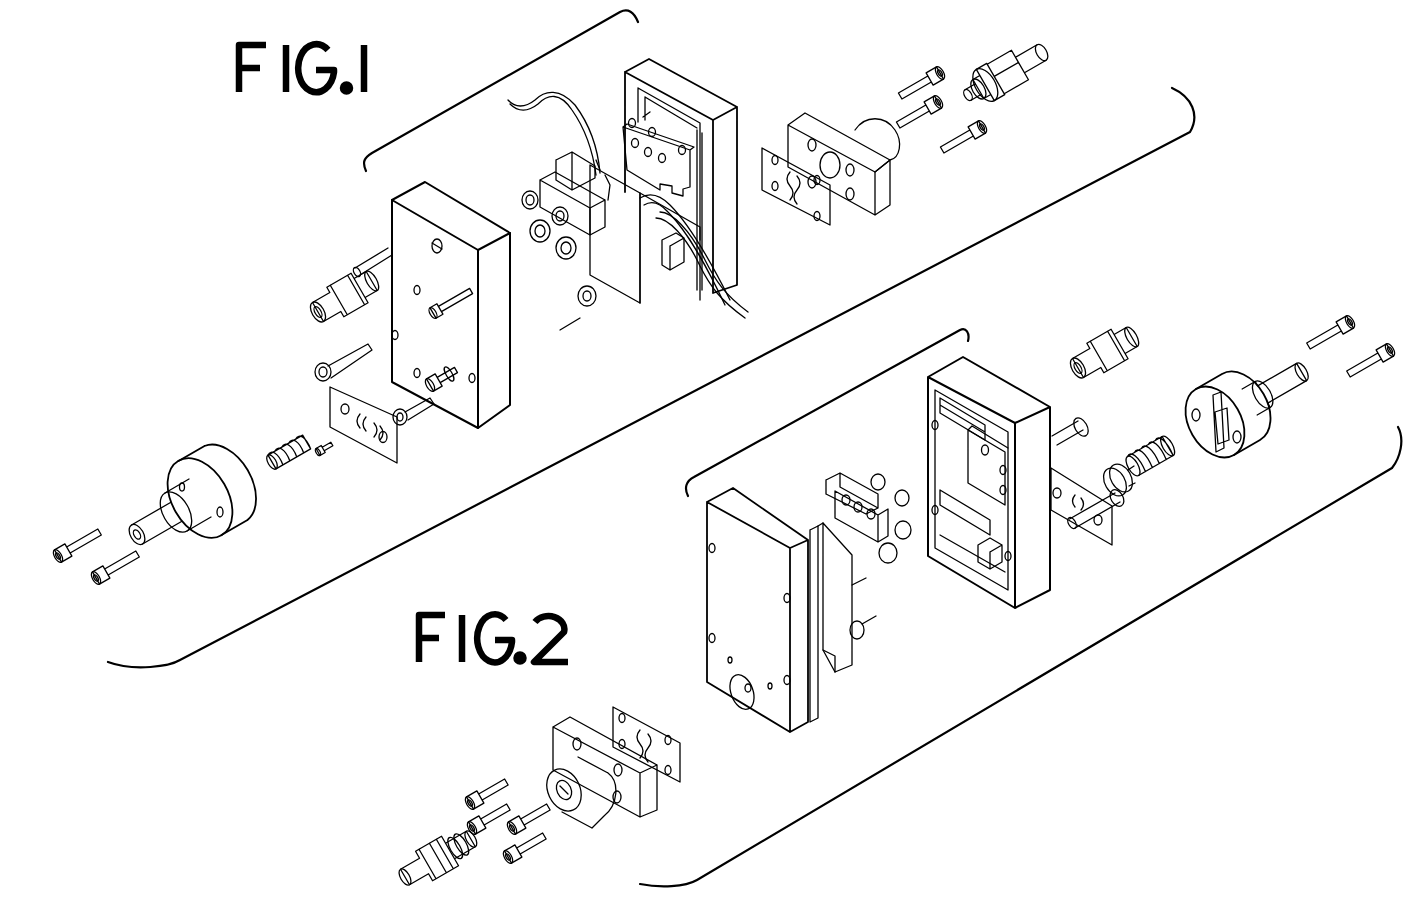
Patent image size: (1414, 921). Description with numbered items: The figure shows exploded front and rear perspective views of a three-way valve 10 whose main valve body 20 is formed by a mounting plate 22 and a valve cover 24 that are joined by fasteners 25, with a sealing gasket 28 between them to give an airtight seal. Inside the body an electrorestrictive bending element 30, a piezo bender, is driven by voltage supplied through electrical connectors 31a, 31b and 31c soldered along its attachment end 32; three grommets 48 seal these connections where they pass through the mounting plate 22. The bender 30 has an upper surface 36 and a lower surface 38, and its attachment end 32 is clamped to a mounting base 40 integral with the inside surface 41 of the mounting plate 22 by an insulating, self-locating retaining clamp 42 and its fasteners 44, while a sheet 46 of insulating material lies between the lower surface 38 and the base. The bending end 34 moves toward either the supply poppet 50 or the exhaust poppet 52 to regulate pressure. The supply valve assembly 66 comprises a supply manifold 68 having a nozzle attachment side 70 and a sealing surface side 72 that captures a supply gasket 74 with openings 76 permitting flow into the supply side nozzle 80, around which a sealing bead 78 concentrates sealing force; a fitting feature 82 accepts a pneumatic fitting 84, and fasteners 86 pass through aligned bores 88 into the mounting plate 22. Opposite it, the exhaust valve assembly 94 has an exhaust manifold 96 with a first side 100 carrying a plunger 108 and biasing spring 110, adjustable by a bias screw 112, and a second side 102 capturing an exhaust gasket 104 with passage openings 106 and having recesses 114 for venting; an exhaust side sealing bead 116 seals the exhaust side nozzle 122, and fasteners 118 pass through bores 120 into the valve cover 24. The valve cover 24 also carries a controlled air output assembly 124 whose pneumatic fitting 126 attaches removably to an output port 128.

In FIG. 1, the three-way valve 10 is at (306, 186).
In FIG. 2, the three-way valve 10 is at (622, 564).
In FIG. 1, the main valve body 20 is at (502, 74).
In FIG. 2, the main valve body 20 is at (826, 402).
In FIG. 1, the mounting plate 22 is at (740, 268).
In FIG. 2, the mounting plate 22 is at (718, 528).
In FIG. 1, the valve cover 24 is at (500, 402).
In FIG. 2, the valve cover 24 is at (1035, 570).
In FIG. 1, the fasteners 25 is at (318, 368).
In FIG. 1, the sealing gasket 28 is at (660, 145).
In FIG. 2, the sealing gasket 28 is at (820, 708).
In FIG. 1, the electrorestrictive bending element 30 is at (660, 300).
In FIG. 2, the electrorestrictive bending element 30 is at (852, 590).
In FIG. 1, the electrical connector 31a is at (566, 95).
In FIG. 1, the electrical connector 31b is at (705, 288).
In FIG. 1, the electrical connector 31c is at (745, 302).
In FIG. 2, the attachment end 32 is at (822, 525).
In FIG. 1, the bending end 34 is at (624, 308).
In FIG. 2, the bending end 34 is at (835, 660).
In FIG. 2, the upper surface 36 is at (835, 640).
In FIG. 1, the lower surface 38 is at (647, 300).
In FIG. 1, the mounting base 40 is at (690, 150).
In FIG. 1, the inside surface 41 is at (690, 198).
In FIG. 1, the retaining clamp 42 is at (548, 168).
In FIG. 2, the retaining clamp 42 is at (842, 472).
In FIG. 1, the fasteners 44 is at (525, 196).
In FIG. 1, the sheet of insulating material 46 is at (666, 150).
In FIG. 1, the grommets 48 is at (540, 242).
In FIG. 2, the grommets 48 is at (890, 556).
In FIG. 1, the supply poppet 50 is at (588, 306).
In FIG. 1, the exhaust poppet 52 is at (665, 282).
In FIG. 2, the exhaust poppet 52 is at (868, 628).
In FIG. 1, the supply valve assembly 66 is at (928, 174).
In FIG. 2, the supply valve assembly 66 is at (656, 816).
In FIG. 1, the supply manifold 68 is at (885, 193).
In FIG. 2, the supply manifold 68 is at (650, 792).
In FIG. 2, the nozzle attachment side 70 is at (562, 742).
In FIG. 1, the sealing surface side 72 is at (820, 150).
In FIG. 1, the supply gasket 74 is at (830, 215).
In FIG. 2, the supply gasket 74 is at (685, 762).
In FIG. 1, the openings 76 is at (790, 195).
In FIG. 2, the openings 76 is at (646, 732).
In FIG. 2, the sealing bead 78 is at (745, 700).
In FIG. 2, the supply side nozzle 80 is at (752, 698).
In FIG. 1, the fitting feature 82 is at (873, 135).
In FIG. 1, the pneumatic fitting 84 is at (1040, 94).
In FIG. 2, the pneumatic fitting 84 is at (420, 866).
In FIG. 1, the fasteners 86 is at (972, 138).
In FIG. 2, the fasteners 86 is at (468, 800).
In FIG. 1, the bores 88 is at (855, 198).
In FIG. 2, the bores 88 is at (618, 802).
In FIG. 1, the exhaust valve assembly 94 is at (178, 453).
In FIG. 2, the exhaust valve assembly 94 is at (1243, 459).
In FIG. 1, the exhaust manifold 96 is at (240, 518).
In FIG. 2, the exhaust manifold 96 is at (1225, 382).
In FIG. 1, the first side 100 is at (190, 535).
In FIG. 1, the second side 102 is at (236, 465).
In FIG. 2, the second side 102 is at (1196, 405).
In FIG. 1, the exhaust gasket 104 is at (363, 447).
In FIG. 2, the exhaust gasket 104 is at (1085, 520).
In FIG. 1, the passage openings 106 is at (383, 440).
In FIG. 2, the passage openings 106 is at (1076, 500).
In FIG. 1, the plunger 108 is at (327, 450).
In FIG. 2, the plunger 108 is at (1110, 492).
In FIG. 1, the biasing spring 110 is at (302, 470).
In FIG. 2, the biasing spring 110 is at (1165, 472).
In FIG. 1, the bias screw 112 is at (165, 528).
In FIG. 2, the bias screw 112 is at (1300, 385).
In FIG. 1, the recesses 114 is at (184, 482).
In FIG. 2, the recesses 114 is at (1225, 455).
In FIG. 1, the exhaust side sealing bead 116 is at (447, 412).
In FIG. 1, the fasteners 118 is at (64, 562).
In FIG. 2, the fasteners 118 is at (1390, 362).
In FIG. 1, the bores 120 is at (221, 520).
In FIG. 2, the bores 120 is at (1242, 437).
In FIG. 1, the exhaust side nozzle 122 is at (447, 405).
In FIG. 1, the controlled air output assembly 124 is at (300, 255).
In FIG. 2, the controlled air output assembly 124 is at (1041, 360).
In FIG. 1, the pneumatic fitting 126 is at (318, 300).
In FIG. 2, the pneumatic fitting 126 is at (1100, 322).
In FIG. 1, the output port 128 is at (432, 240).